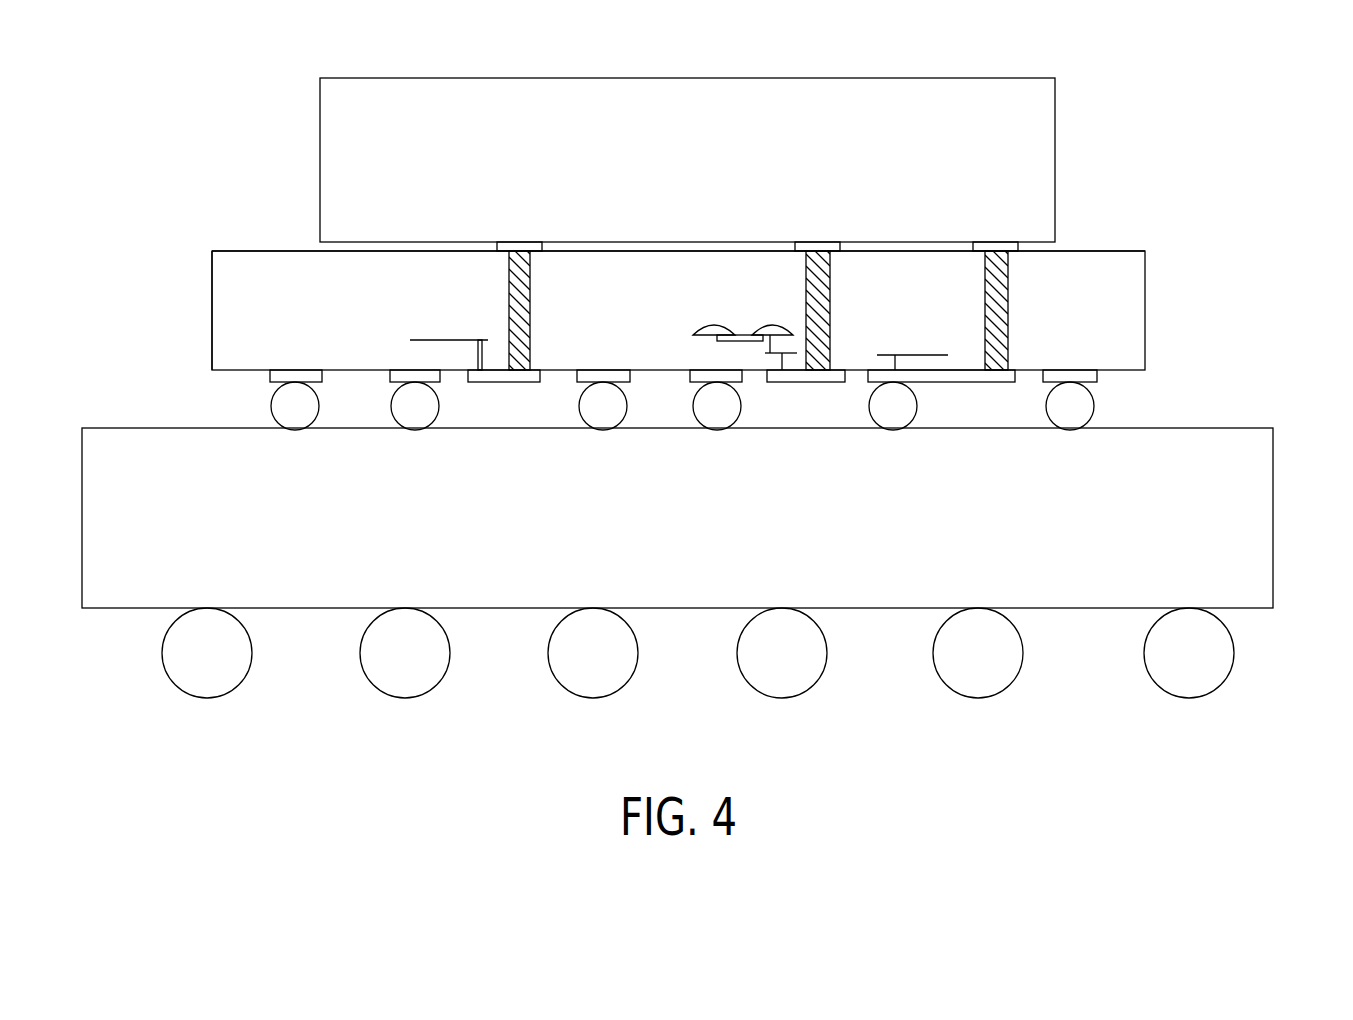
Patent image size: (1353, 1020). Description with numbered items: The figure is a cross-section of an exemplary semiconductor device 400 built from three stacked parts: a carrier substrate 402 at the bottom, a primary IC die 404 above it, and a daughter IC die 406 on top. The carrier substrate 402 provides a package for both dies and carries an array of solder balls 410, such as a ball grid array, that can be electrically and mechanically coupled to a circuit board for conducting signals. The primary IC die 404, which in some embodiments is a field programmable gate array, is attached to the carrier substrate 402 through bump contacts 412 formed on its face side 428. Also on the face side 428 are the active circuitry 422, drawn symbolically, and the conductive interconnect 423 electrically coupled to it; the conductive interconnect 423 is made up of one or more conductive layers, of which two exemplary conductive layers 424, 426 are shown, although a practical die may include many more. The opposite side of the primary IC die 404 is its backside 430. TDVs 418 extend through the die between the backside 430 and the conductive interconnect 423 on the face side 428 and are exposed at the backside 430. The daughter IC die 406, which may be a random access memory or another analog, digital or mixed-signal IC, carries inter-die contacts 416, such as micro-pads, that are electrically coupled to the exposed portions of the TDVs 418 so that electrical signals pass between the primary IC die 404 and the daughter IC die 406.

The semiconductor device 400 is at (1040, 798).
The carrier substrate 402 is at (1273, 521).
The primary IC die 404 is at (1146, 316).
The daughter IC die 406 is at (1055, 152).
The solder balls 410 is at (1188, 699).
The bump contacts 412 is at (271, 403).
The inter-die contacts 416 is at (512, 242).
The TDVs 418 is at (531, 292).
The active circuitry 422 is at (710, 323).
The conductive interconnect 423 is at (196, 330).
The conductive layer 424 is at (448, 337).
The conductive layer 426 is at (924, 355).
The face side 428 is at (1125, 372).
The backside 430 is at (1136, 249).